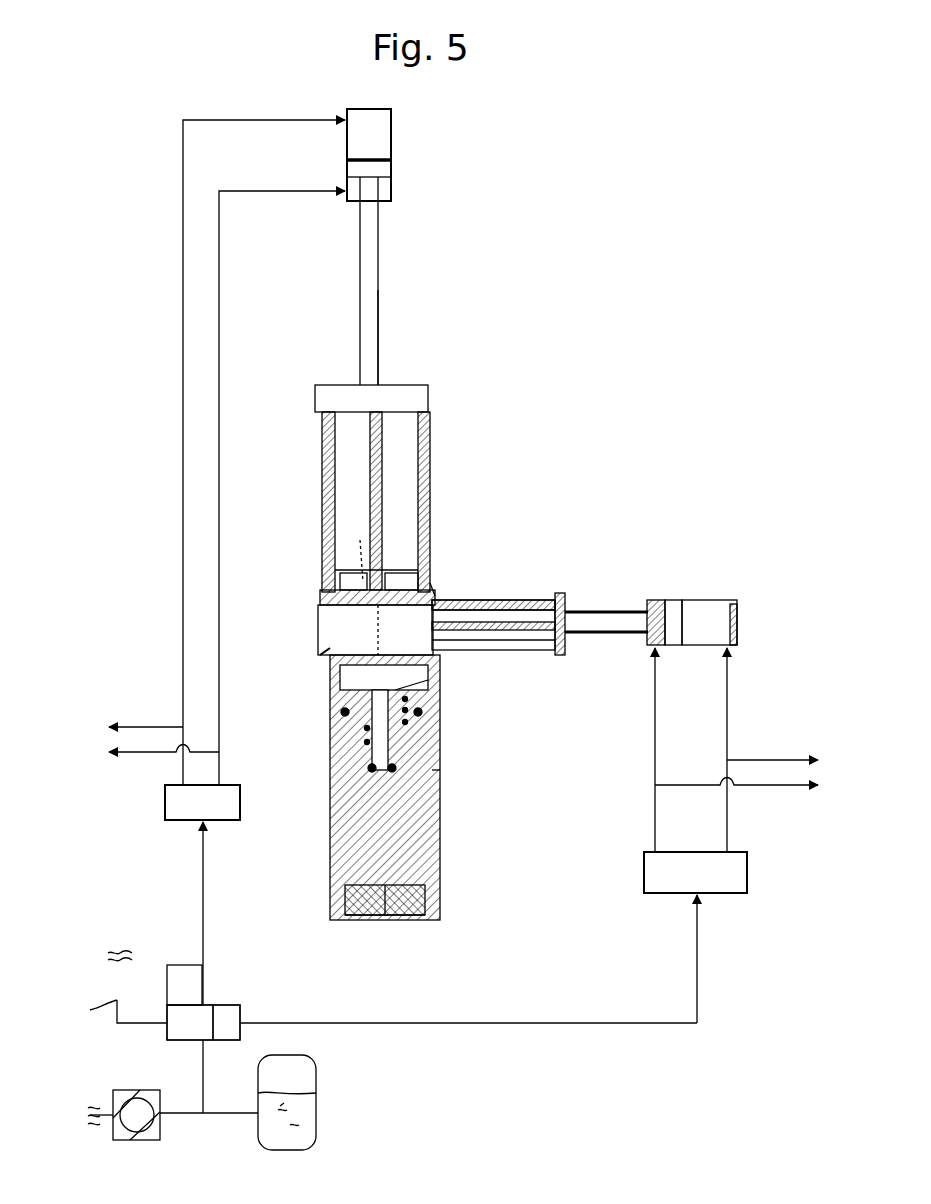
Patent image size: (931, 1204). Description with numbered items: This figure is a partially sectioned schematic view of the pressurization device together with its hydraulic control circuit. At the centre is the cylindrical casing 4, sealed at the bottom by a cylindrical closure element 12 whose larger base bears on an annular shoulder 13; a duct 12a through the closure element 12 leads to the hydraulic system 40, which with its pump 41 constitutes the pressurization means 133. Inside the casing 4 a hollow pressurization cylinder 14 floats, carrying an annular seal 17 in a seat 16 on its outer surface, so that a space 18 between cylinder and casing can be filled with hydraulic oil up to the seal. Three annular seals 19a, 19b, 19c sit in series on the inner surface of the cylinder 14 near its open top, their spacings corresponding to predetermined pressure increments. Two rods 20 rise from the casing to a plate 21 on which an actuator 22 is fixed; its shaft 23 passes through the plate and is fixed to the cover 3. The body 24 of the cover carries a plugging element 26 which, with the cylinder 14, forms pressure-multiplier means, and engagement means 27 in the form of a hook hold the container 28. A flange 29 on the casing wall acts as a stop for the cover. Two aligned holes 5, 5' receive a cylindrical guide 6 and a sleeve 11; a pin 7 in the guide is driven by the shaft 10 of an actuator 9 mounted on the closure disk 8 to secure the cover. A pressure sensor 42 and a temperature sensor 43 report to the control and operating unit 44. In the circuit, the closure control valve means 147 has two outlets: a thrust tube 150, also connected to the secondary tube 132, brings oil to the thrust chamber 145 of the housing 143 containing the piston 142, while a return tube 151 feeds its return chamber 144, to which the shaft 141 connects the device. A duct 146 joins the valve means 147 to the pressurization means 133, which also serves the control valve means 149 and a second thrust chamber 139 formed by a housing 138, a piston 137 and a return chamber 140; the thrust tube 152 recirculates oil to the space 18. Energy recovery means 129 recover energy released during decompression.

The cover 3 is at (355, 552).
The cylindrical casing 4 is at (440, 745).
The first hole 5 is at (493, 610).
The second hole 5' is at (306, 657).
The cylindrical guide 6 is at (492, 600).
The pin 7 is at (318, 628).
The closure disk 8 is at (566, 600).
The actuator 9 is at (598, 636).
The shaft 10 is at (523, 632).
The sleeve 11 is at (322, 598).
The cylindrical closure element 12 is at (372, 918).
The duct 12a is at (388, 918).
The annular shoulder 13 is at (410, 918).
The pressurization cylinder 14 is at (440, 775).
The seat 16 is at (345, 720).
The annular seal 17 is at (340, 712).
The space 18 is at (440, 820).
The first annular seal 19a is at (408, 699).
The second annular seal 19b is at (410, 710).
The third annular seal 19c is at (410, 722).
The rods 20 is at (322, 470).
The plate 21 is at (378, 488).
The actuator 22 is at (382, 362).
The shaft 23 is at (382, 446).
The body 24 is at (433, 582).
The plugging element 26 is at (432, 675).
The engagement means 27 is at (340, 735).
The container 28 is at (340, 752).
The flange 29 is at (340, 676).
The hydraulic system 40 is at (177, 1030).
The pump 41 is at (228, 1017).
The pressure sensor 42 is at (372, 768).
The temperature sensor 43 is at (392, 768).
The control and operating unit 44 is at (183, 985).
The energy recovery means 129 is at (316, 1100).
The secondary tube 132 is at (90, 998).
The pressurization means 133 is at (225, 994).
The piston 137 is at (680, 598).
The housing 138 is at (730, 598).
The thrust chamber 139 is at (737, 620).
The return chamber 140 is at (655, 600).
The shaft 141 is at (360, 282).
The piston 142 is at (391, 168).
The housing 143 is at (391, 135).
The return chamber 144 is at (391, 192).
The thrust chamber 145 is at (347, 146).
The duct 146 is at (203, 902).
The closure control valve means 147 is at (240, 806).
The control valve means 149 is at (747, 868).
The thrust tube 150 is at (183, 466).
The return tube 151 is at (219, 550).
The thrust tube 152 is at (727, 682).